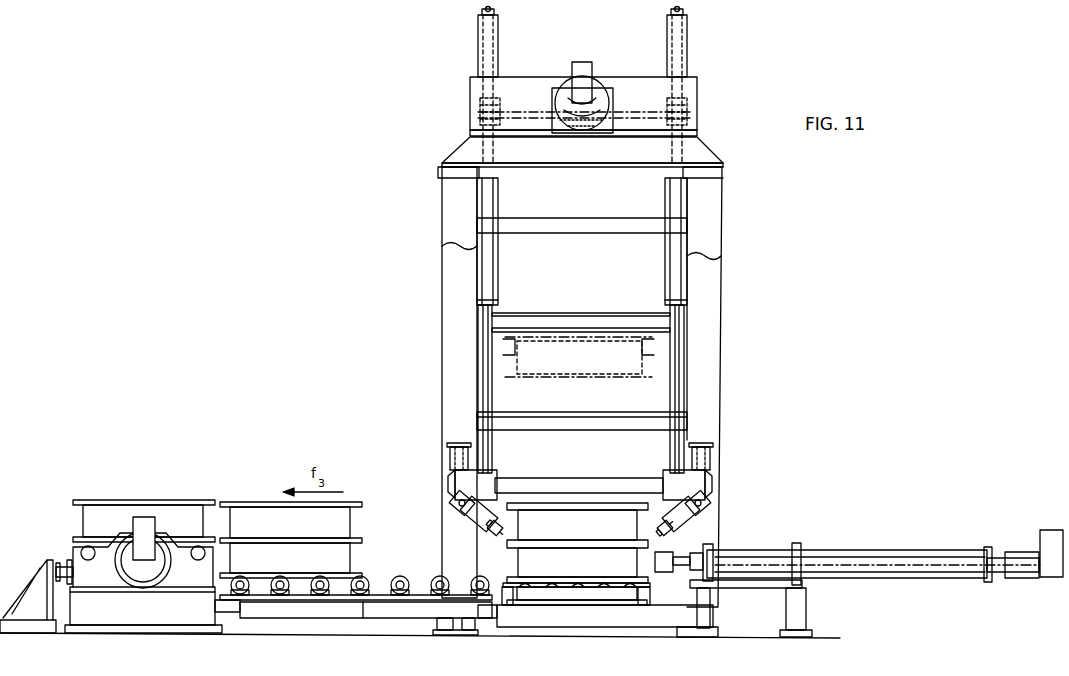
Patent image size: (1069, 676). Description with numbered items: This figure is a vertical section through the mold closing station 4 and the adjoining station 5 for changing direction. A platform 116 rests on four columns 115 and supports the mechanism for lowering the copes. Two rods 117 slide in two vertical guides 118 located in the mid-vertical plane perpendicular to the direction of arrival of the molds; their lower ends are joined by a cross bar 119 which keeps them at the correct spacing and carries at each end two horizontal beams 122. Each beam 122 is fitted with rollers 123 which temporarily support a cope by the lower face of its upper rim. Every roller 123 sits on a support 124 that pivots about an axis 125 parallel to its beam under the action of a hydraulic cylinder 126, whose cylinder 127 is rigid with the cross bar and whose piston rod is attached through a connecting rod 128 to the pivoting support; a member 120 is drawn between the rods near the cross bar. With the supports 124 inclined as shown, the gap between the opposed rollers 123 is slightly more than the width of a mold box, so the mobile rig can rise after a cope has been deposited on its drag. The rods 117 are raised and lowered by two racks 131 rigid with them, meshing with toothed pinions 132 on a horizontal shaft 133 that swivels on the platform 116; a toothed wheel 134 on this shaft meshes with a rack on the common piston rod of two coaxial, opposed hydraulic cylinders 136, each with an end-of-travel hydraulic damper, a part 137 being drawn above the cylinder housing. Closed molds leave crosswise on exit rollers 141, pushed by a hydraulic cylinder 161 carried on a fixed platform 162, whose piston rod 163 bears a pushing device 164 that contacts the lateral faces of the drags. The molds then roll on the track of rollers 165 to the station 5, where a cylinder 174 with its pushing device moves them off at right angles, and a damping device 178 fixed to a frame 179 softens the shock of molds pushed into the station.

The press 4 is at (735, 209).
The station for changing direction 5 is at (161, 494).
The columns 115 is at (458, 225).
The platform 116 is at (698, 157).
The rods 117 is at (490, 375).
The vertical guides 118 is at (478, 48).
The cross bar 119 is at (566, 483).
The pressing plate 120 is at (535, 478).
The horizontal beams 122 is at (494, 481).
The rollers 123 is at (648, 338).
The support 124 is at (470, 515).
The axis 125 is at (455, 500).
The hydraulic cylinder 126 is at (707, 463).
The cylinder 127 is at (705, 456).
The connecting rod 128 is at (701, 501).
The racks 131 is at (472, 95).
The toothed pinions 132 is at (692, 106).
The horizontal shaft 133 is at (638, 118).
The toothed wheel 134 is at (592, 130).
The hydraulic cylinders 136 is at (568, 82).
The drive shaft 137 is at (592, 92).
The exit rollers 141 is at (567, 588).
The hydraulic cylinder 161 is at (890, 540).
The fixed platform 162 is at (789, 590).
The piston rod 163 is at (672, 554).
The pushing device 164 is at (658, 572).
The rollers 165 is at (392, 578).
The cylinder 174 is at (165, 566).
The damping device 178 is at (63, 560).
The fixed frame 179 is at (26, 586).